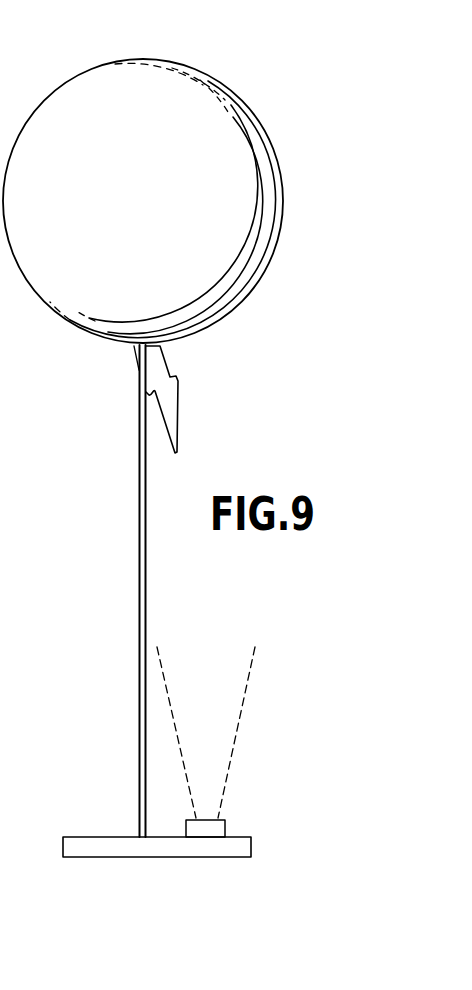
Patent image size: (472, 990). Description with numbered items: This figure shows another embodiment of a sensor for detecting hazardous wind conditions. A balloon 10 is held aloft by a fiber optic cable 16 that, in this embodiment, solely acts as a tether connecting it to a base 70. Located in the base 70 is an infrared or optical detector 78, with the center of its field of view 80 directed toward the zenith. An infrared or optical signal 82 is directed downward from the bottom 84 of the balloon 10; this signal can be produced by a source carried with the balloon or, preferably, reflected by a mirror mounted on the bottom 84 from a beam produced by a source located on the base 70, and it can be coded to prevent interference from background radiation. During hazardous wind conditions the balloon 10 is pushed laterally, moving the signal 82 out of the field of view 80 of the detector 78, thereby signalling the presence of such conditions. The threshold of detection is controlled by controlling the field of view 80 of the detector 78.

The balloon 10 is at (266, 128).
The fiber optic cable 16 is at (146, 588).
The base 70 is at (251, 849).
The infrared or optical detector 78 is at (226, 823).
The field of view 80 is at (243, 716).
The infrared or optical signal 82 is at (177, 405).
The bottom of the balloon 84 is at (134, 346).